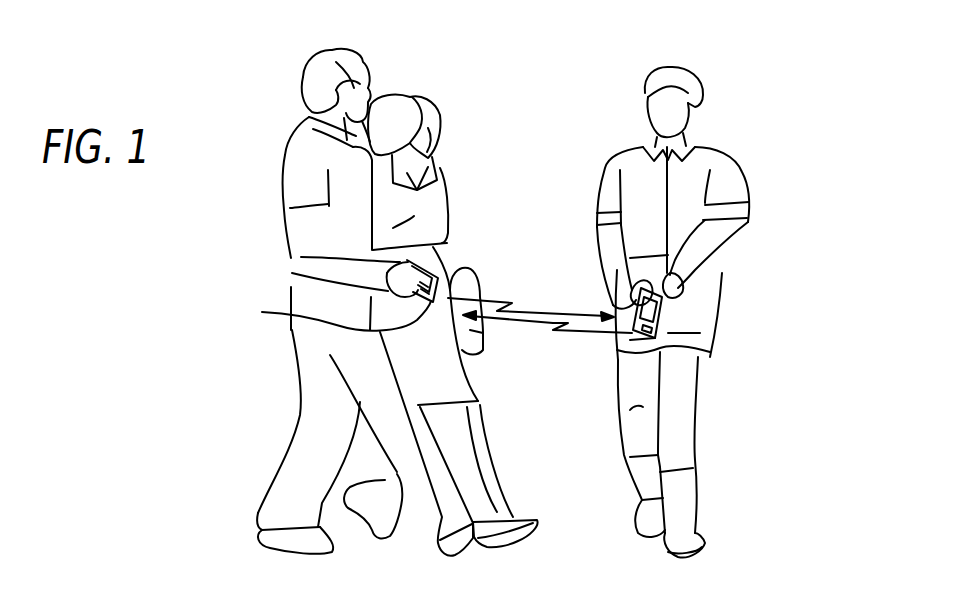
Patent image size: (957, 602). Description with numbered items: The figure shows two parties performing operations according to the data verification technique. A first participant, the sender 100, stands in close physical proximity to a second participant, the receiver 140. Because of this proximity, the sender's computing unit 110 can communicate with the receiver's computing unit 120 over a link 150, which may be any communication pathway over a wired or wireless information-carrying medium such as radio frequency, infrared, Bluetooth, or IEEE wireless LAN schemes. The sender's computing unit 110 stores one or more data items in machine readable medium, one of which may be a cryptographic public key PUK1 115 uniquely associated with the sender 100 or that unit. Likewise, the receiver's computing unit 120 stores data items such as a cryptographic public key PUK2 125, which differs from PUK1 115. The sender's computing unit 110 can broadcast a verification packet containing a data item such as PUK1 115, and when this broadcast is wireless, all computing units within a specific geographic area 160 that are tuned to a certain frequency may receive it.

The first participant (sender) 100 is at (252, 148).
The sender's computing unit 110 is at (290, 313).
The cryptographic public key (PUK1) 115 is at (438, 276).
The receiver's computing unit 120 is at (632, 290).
The cryptographic public key (PUK2) 125 is at (660, 336).
The second participant (receiver) 140 is at (775, 145).
The link 150 is at (575, 306).
The specific geographic area 160 is at (253, 423).